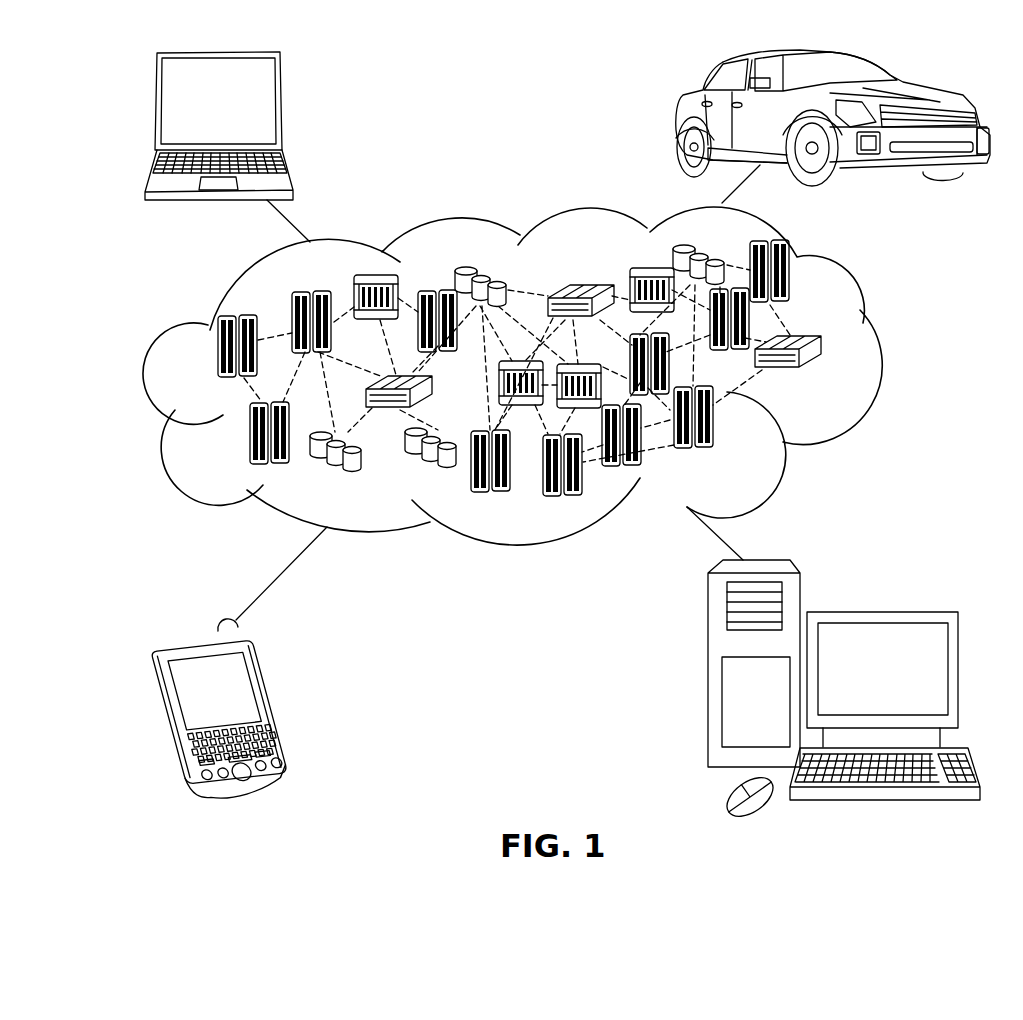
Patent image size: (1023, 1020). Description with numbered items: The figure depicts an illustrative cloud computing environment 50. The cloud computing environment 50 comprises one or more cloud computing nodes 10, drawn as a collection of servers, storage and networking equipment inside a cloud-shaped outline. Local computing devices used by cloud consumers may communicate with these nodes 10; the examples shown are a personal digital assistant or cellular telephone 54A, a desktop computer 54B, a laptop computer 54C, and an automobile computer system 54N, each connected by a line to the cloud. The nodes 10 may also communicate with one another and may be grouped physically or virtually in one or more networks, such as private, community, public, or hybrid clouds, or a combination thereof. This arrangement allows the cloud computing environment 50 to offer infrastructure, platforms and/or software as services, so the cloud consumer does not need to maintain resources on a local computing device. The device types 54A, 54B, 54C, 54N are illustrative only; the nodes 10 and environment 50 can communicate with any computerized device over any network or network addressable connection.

The cloud computing nodes 10 is at (832, 380).
The cloud computing environment 50 is at (882, 348).
The personal digital assistant (PDA) or cellular telephone 54A is at (277, 700).
The desktop computer 54B is at (880, 610).
The laptop computer 54C is at (283, 108).
The automobile computer system 54N is at (680, 120).